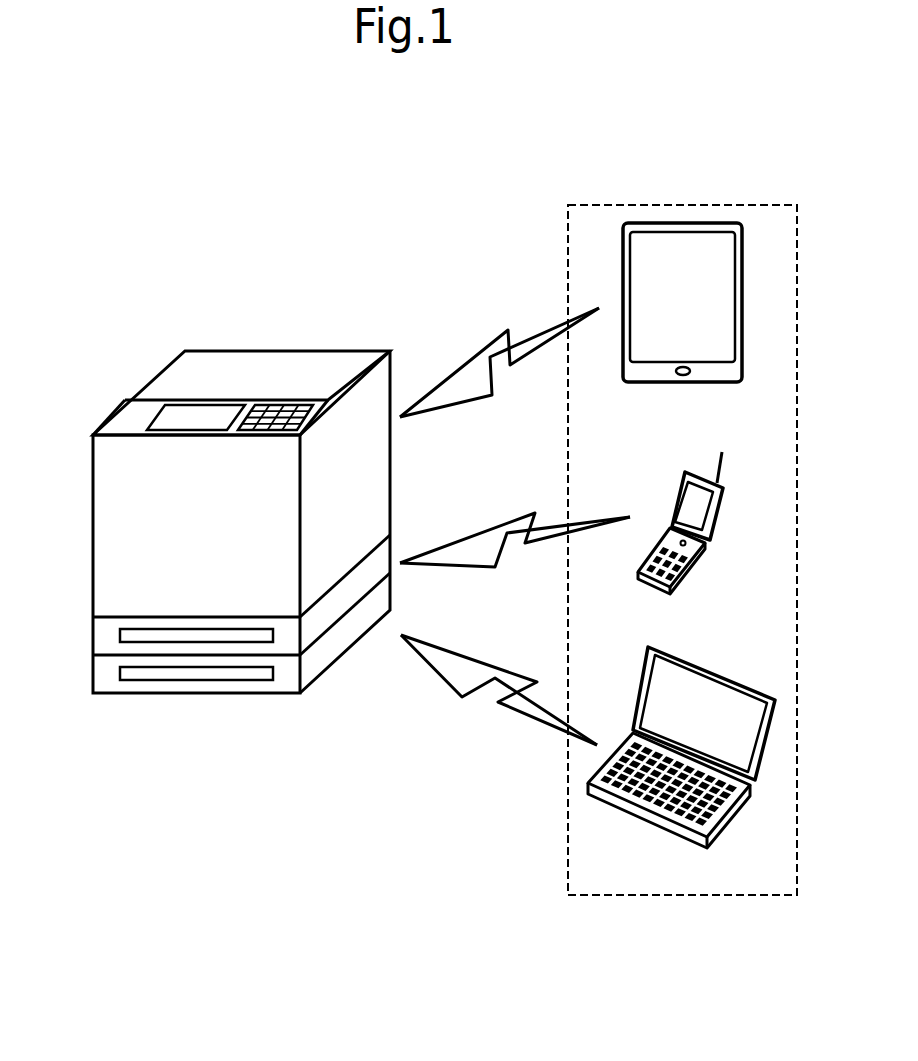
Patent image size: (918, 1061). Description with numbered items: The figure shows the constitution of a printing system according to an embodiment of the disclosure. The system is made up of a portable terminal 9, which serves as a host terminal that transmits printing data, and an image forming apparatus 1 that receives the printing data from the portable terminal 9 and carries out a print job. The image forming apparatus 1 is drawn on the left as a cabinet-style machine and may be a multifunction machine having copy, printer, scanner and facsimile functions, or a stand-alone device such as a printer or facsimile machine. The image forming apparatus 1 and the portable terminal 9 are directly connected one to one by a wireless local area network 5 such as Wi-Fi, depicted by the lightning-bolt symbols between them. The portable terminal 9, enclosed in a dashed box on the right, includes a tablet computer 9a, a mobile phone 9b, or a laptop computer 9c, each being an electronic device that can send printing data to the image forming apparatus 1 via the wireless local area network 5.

The image forming apparatus 1 is at (177, 693).
The wireless local area network 5 is at (491, 340).
The portable terminal 9 is at (697, 205).
The tablet computer 9a is at (713, 383).
The mobile phone 9b is at (695, 570).
The laptop computer 9c is at (645, 821).